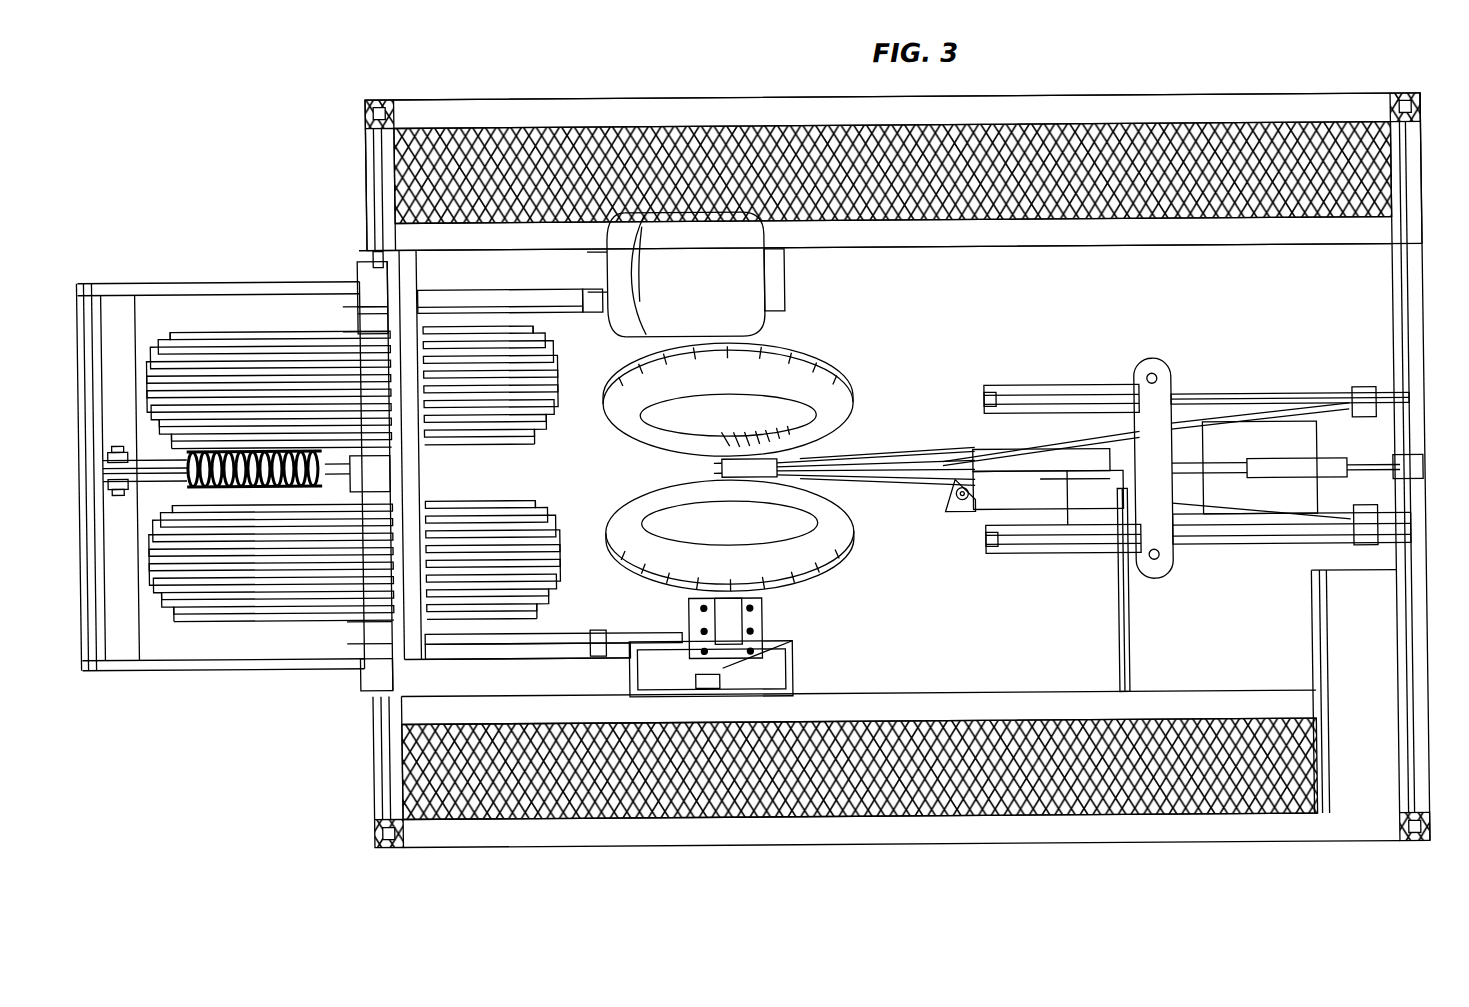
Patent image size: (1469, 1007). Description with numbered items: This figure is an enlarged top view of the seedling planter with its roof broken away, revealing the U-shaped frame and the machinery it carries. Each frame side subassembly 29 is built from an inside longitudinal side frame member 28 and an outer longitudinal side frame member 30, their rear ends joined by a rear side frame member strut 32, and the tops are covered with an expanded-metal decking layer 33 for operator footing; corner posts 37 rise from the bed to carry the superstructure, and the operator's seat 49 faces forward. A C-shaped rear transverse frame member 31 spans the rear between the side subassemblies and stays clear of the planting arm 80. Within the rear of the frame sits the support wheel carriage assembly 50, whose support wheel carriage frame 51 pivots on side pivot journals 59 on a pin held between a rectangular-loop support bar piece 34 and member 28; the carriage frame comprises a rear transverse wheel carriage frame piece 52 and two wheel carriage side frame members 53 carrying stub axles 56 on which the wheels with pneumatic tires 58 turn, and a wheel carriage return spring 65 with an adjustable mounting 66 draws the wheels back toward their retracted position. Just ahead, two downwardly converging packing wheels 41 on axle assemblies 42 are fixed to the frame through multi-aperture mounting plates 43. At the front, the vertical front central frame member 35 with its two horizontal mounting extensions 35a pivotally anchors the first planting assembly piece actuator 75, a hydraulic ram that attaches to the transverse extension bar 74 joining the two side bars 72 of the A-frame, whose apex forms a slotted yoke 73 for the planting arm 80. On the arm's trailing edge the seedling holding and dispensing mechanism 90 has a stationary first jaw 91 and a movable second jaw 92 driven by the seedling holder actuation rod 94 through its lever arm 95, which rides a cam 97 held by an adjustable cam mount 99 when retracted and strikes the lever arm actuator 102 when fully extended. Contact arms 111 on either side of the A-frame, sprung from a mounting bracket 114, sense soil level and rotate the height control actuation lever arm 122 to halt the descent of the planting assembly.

The inside longitudinal side frame member 28 is at (372, 254).
The frame side subassembly 29 is at (585, 93).
The outer longitudinal side frame member 30 is at (430, 117).
The rear transverse frame member 31 is at (425, 690).
The rear side frame member strut 32 is at (362, 172).
The decking layer 33 is at (768, 165).
The support bar piece 34 is at (552, 312).
The vertical front central frame member 35 is at (1422, 470).
The horizontal mounting extension 35a is at (1382, 395).
The corner post 37 is at (368, 106).
The packing wheel 41 is at (822, 552).
The axle assembly 42 is at (745, 652).
The multi-aperture mounting plate 43 is at (765, 614).
The operator's seat 49 is at (752, 270).
The support wheel carriage assembly 50 is at (311, 453).
The support wheel carriage frame 51 is at (140, 690).
The rear transverse wheel carriage frame piece 52 is at (123, 634).
The wheel carriage side frame member 53 is at (207, 282).
The stub axle 56 is at (350, 318).
The pneumatic tire 58 is at (493, 438).
The side pivot journal 59 is at (595, 630).
The wheel carriage return spring 65 is at (142, 492).
The adjustable mounting 66 is at (120, 443).
The side bar 72 is at (1210, 420).
The slotted yoke 73 is at (960, 433).
The transverse extension bar 74 is at (1185, 422).
The first planting assembly piece actuator 75 is at (1265, 460).
The planting arm 80 is at (882, 515).
The seedling holding and dispensing mechanism 90 is at (850, 438).
The first jaw 91 is at (690, 482).
The second jaw 92 is at (715, 466).
The seedling holder actuation rod 94 is at (880, 470).
The lever arm 95 is at (1067, 515).
The cam 97 is at (1072, 506).
The adjustable cam mount 99 is at (1128, 628).
The lever arm actuator 102 is at (990, 505).
The contact arm 111 is at (1040, 393).
The mounting bracket 114 is at (1152, 360).
The height control actuation lever arm 122 is at (1212, 552).